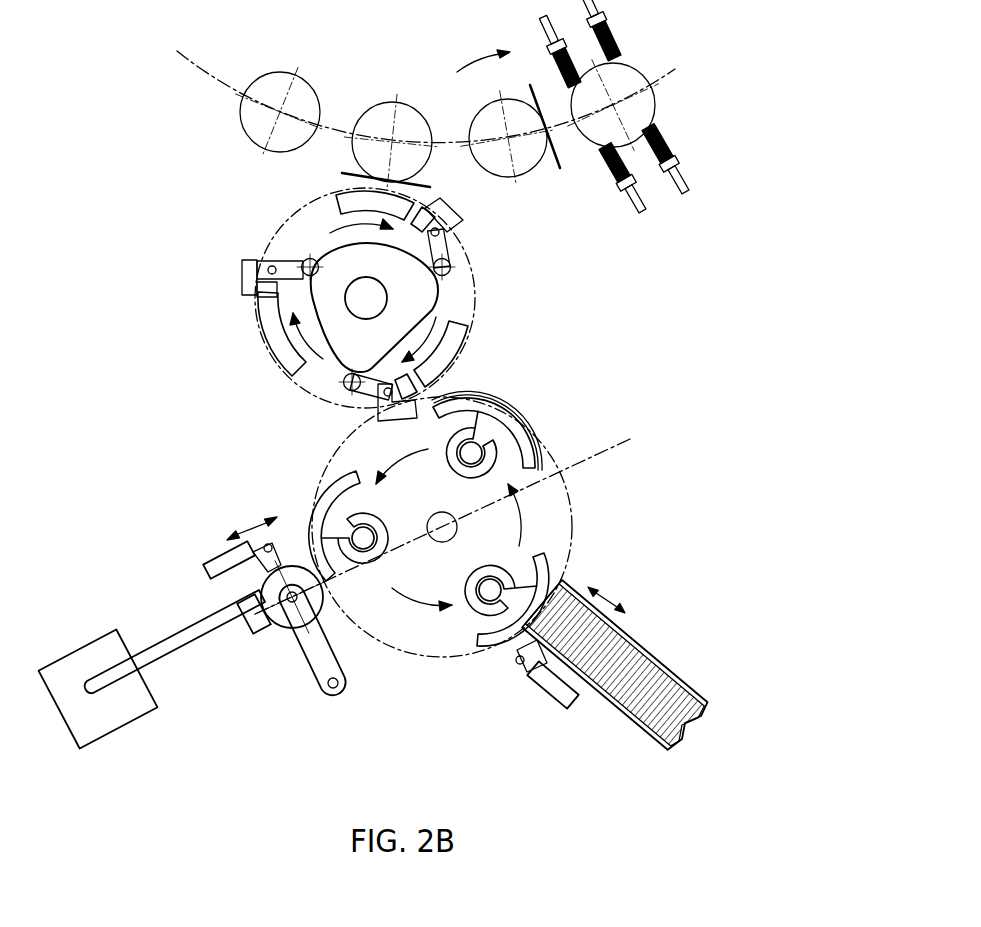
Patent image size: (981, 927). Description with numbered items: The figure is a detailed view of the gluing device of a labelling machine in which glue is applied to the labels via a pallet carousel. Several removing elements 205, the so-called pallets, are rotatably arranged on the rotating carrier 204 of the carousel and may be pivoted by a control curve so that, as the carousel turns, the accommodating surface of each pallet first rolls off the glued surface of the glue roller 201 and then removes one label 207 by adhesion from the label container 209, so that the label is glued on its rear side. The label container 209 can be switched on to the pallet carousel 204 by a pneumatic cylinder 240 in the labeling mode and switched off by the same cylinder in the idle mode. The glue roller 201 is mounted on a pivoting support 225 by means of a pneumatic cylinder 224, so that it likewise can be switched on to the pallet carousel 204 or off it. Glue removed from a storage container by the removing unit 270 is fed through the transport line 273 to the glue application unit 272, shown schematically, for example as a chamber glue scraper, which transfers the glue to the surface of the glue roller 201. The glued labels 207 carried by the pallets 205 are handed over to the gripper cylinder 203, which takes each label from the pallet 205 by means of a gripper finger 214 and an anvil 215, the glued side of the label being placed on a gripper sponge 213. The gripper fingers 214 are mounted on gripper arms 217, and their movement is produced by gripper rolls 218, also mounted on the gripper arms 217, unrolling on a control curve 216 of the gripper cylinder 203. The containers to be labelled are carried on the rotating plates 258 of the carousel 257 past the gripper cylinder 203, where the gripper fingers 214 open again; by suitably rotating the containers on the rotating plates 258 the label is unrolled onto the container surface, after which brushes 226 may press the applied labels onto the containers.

The glue roller 201 is at (258, 587).
The gripper cylinder 203 is at (298, 378).
The rotating carrier 204 is at (553, 452).
The removing element 205 is at (372, 552).
The label 207 is at (360, 178).
The label container 209 is at (620, 713).
The gripper sponge 213 is at (263, 325).
The gripper finger 214 is at (245, 262).
The anvil 215 is at (256, 297).
The control curve 216 is at (433, 302).
The gripper arm 217 is at (446, 243).
The gripper roll 218 is at (455, 271).
The pneumatic cylinder 224 is at (222, 553).
The pivoting support 225 is at (313, 662).
The brushes 226 is at (685, 197).
The pneumatic cylinder 240 is at (537, 676).
The carousel 257 is at (460, 58).
The rotating plates 258 is at (278, 72).
The removing unit 270 is at (128, 728).
The glue application unit 272 is at (260, 637).
The transport line 273 is at (212, 650).